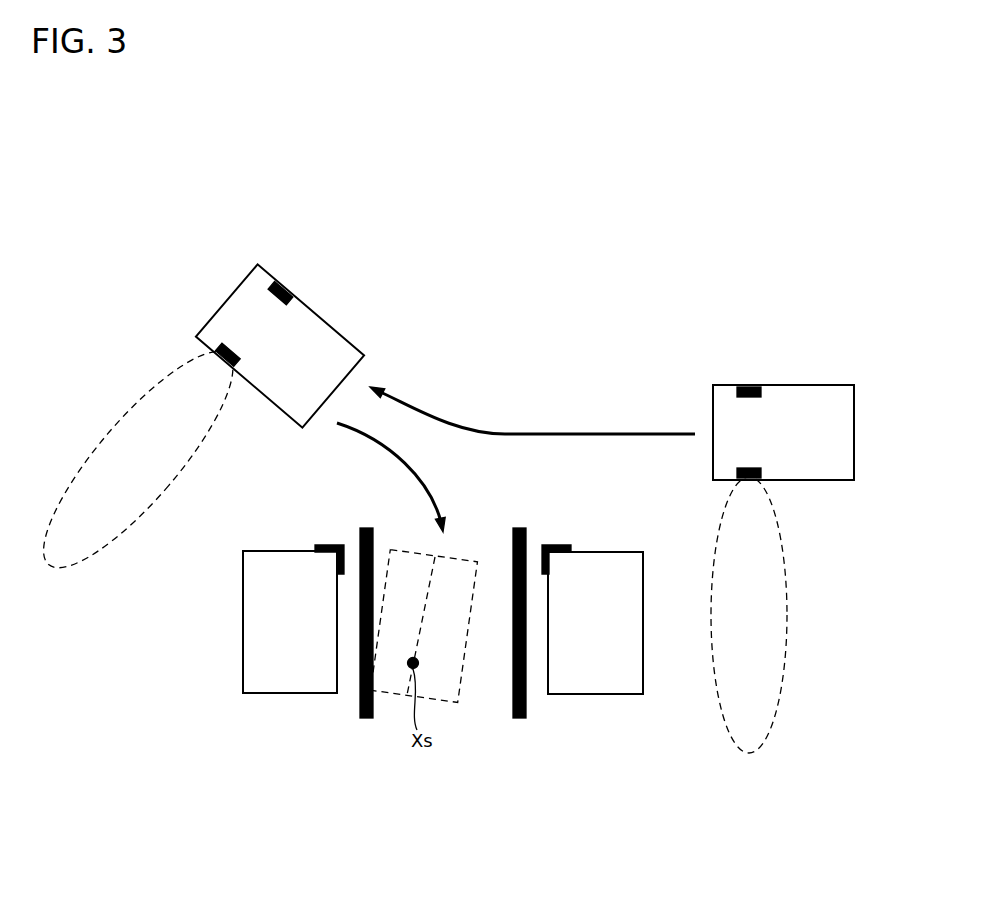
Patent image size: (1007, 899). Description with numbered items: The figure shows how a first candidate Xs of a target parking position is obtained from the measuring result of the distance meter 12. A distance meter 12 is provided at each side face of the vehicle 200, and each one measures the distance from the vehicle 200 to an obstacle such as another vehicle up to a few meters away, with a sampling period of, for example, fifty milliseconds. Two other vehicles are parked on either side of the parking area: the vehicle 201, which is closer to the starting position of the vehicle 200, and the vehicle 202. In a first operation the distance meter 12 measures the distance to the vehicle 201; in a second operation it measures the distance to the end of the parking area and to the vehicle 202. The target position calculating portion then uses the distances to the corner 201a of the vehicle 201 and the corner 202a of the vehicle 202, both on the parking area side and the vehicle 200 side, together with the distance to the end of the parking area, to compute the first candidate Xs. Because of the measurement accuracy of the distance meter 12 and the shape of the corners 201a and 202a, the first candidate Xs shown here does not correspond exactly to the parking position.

The distance meter 12 is at (286, 288).
The vehicle 200 is at (330, 320).
The vehicle 201 is at (627, 551).
The corner 201a is at (562, 545).
The vehicle 202 is at (275, 550).
The corner 202a is at (328, 545).